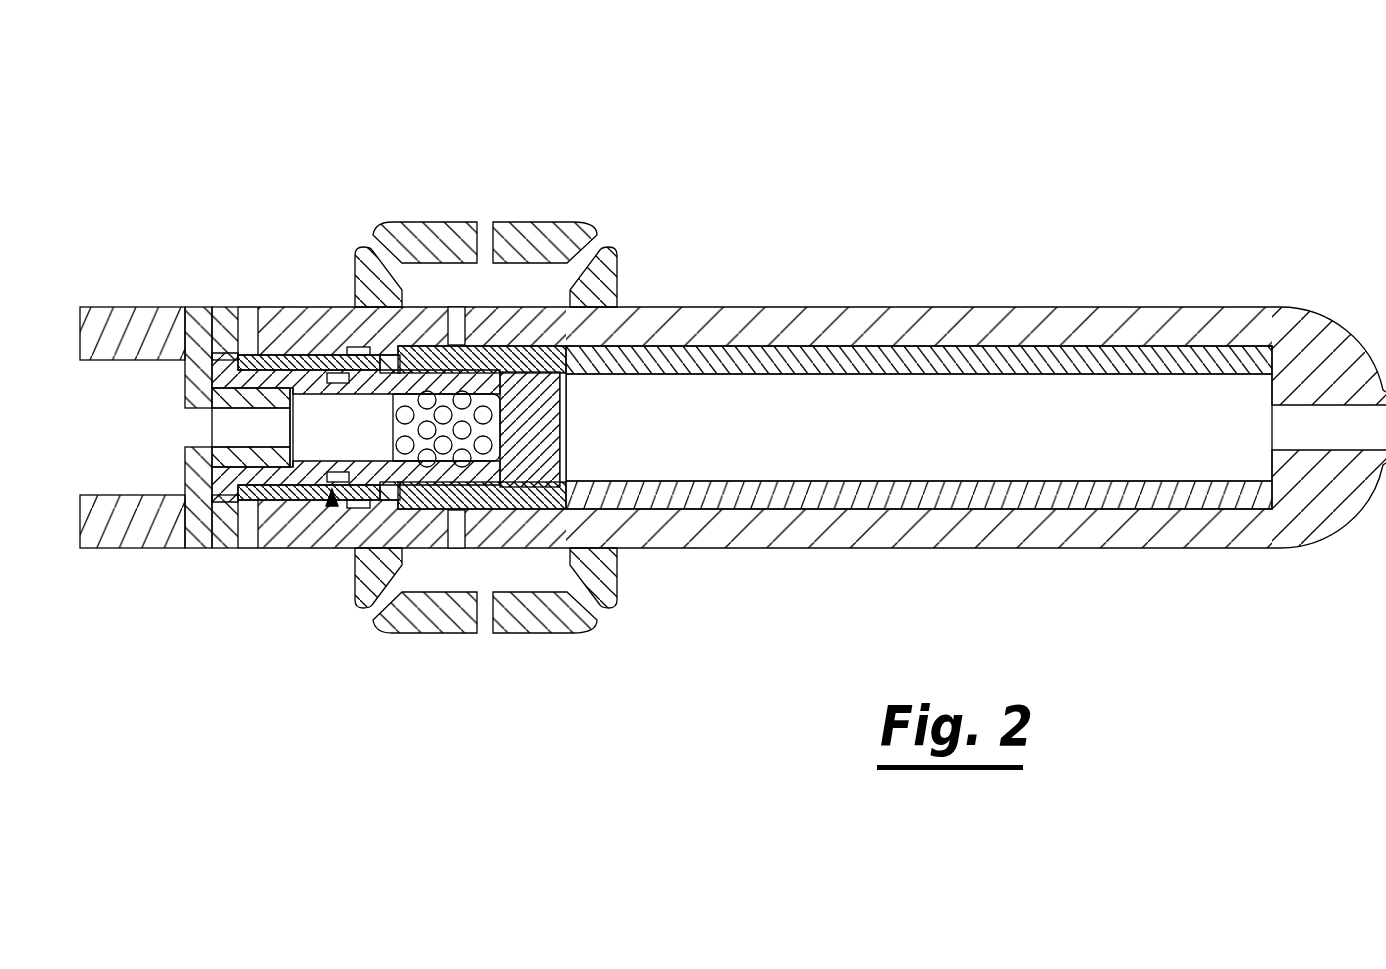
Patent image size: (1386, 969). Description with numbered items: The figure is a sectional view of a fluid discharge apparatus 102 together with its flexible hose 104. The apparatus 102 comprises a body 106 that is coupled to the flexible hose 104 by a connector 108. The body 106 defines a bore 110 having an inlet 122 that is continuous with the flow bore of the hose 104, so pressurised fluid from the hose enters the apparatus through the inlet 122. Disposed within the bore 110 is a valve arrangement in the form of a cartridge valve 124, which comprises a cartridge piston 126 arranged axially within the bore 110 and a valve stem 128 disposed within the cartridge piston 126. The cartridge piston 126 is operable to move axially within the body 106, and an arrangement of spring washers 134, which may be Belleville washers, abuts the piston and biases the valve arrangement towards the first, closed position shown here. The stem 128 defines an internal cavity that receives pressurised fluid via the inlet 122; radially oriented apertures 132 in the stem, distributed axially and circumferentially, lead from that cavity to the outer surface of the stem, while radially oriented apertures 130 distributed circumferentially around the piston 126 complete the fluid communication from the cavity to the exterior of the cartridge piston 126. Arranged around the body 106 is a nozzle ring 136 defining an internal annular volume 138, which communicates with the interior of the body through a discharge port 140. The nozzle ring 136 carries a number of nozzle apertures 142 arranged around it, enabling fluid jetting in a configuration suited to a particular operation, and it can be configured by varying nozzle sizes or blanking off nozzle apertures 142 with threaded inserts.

The apparatus 102 is at (852, 183).
The hose 104 is at (127, 549).
The body 106 is at (1003, 330).
The connector 108 is at (198, 540).
The bore 110 is at (745, 455).
The inlet 122 is at (217, 422).
The cartridge valve 124 is at (331, 506).
The cartridge piston 126 is at (291, 375).
The valve stem 128 is at (243, 366).
The apertures 130 is at (388, 358).
The apertures 132 is at (430, 472).
The arrangement of spring washers 134 is at (1112, 497).
The nozzle ring 136 is at (430, 242).
The internal annular volume 138 is at (537, 280).
The discharge port 140 is at (458, 325).
The nozzle apertures 142 is at (370, 243).